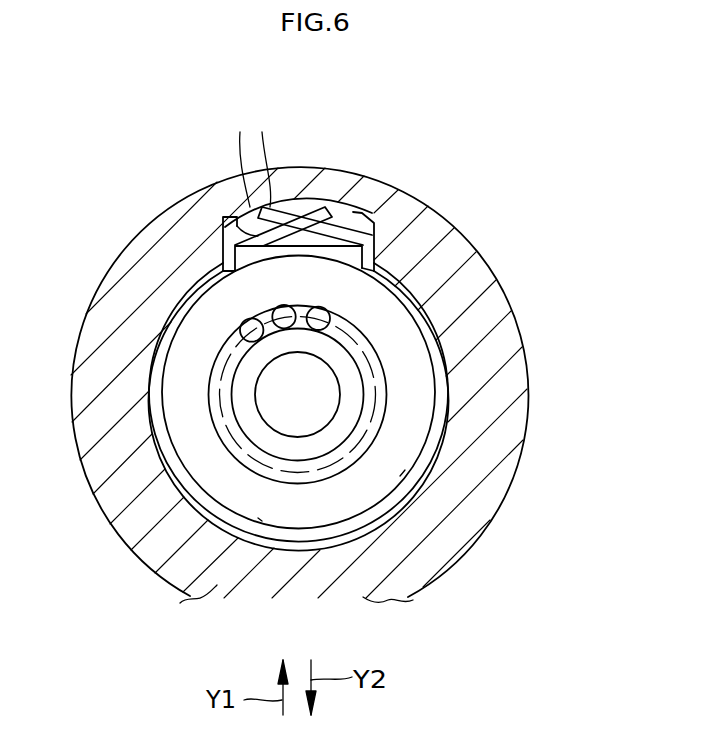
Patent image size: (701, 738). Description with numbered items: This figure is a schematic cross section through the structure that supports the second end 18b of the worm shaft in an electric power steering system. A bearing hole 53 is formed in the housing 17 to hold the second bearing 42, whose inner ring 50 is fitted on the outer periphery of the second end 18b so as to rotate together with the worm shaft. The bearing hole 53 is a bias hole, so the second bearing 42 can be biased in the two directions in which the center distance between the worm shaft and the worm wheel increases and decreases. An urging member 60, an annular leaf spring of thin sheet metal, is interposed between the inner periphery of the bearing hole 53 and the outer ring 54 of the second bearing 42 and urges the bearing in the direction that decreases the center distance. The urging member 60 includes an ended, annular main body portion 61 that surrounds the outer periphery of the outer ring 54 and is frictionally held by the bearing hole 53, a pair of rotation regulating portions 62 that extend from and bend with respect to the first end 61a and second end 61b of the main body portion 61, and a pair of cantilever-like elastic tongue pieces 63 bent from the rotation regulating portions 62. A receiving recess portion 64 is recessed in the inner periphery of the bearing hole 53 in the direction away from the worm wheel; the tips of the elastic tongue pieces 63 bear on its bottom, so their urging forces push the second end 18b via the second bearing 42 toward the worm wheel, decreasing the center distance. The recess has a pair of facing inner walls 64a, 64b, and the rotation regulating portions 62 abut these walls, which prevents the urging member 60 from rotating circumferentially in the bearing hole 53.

The housing 17 is at (515, 430).
The second end 18b is at (161, 601).
The second bearing 42 is at (434, 336).
The inner ring 50 is at (343, 423).
The bearing hole 53 is at (253, 513).
The outer ring 54 is at (363, 492).
The urging member 60 is at (418, 496).
The main body portion 61 is at (297, 405).
The first end 61a is at (380, 268).
The second end 61b is at (215, 277).
The rotation regulating portions 62 is at (227, 250).
The elastic tongue pieces 63 is at (244, 157).
The receiving recess portion 64 is at (292, 204).
The inner wall 64a is at (342, 210).
The inner wall 64b is at (240, 208).